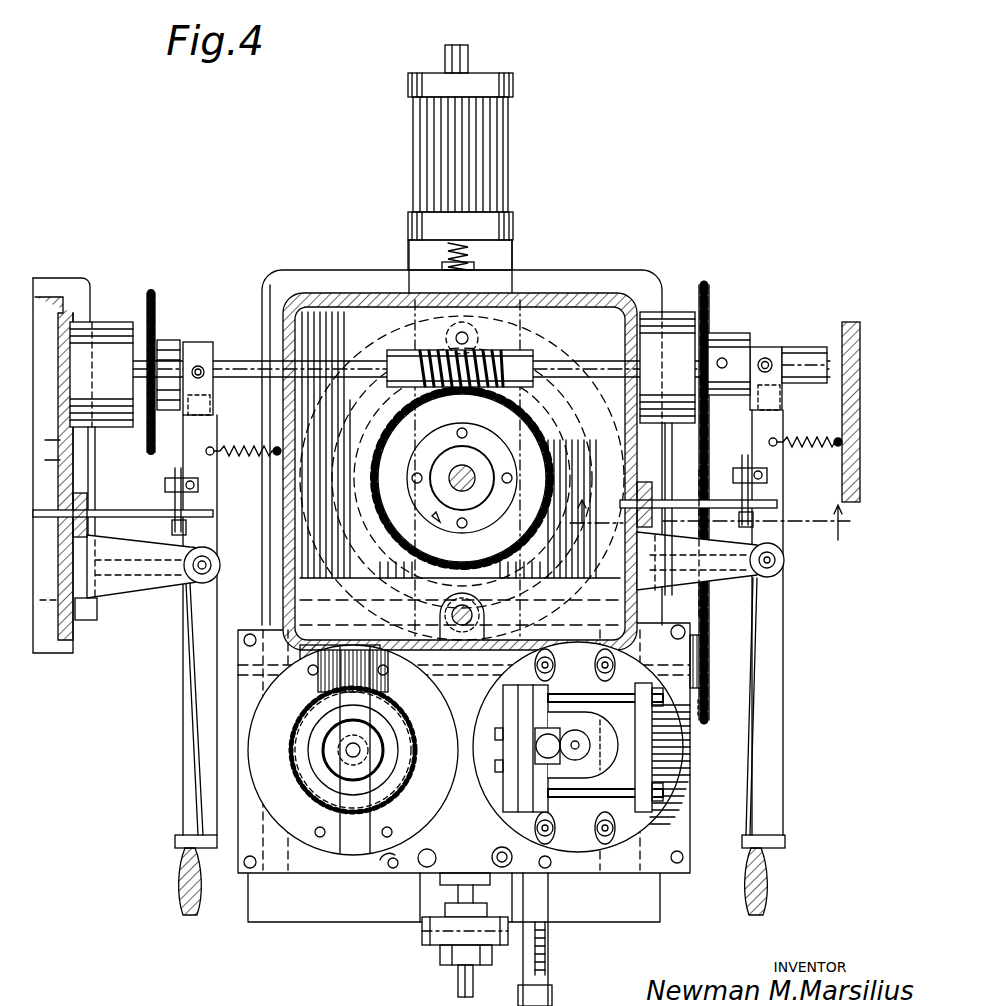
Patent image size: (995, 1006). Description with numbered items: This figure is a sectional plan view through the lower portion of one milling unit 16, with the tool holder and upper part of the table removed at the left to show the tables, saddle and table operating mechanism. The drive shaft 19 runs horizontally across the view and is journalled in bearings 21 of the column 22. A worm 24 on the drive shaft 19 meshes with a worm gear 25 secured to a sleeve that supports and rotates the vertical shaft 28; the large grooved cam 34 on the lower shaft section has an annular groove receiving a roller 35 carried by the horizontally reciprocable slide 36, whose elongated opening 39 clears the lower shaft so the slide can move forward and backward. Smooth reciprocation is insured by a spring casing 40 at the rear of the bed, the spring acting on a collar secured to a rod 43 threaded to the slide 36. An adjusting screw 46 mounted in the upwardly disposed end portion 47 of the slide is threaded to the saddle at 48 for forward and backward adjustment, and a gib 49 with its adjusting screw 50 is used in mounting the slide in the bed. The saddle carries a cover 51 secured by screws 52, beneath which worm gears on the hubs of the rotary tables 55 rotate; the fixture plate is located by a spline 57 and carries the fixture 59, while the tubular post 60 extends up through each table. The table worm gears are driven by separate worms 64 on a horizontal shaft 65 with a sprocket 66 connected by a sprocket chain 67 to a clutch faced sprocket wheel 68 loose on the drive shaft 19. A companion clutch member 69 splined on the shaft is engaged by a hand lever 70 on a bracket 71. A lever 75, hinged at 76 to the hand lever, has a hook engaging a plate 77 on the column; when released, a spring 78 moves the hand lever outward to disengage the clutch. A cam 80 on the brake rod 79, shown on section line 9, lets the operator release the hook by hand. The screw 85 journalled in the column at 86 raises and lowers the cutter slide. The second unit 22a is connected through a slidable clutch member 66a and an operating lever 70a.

The section line 9- 9 is at (719, 503).
The milling unit 16 is at (460, 470).
The drive shaft 19 is at (795, 348).
The bearings 21 is at (90, 335).
The column 22 is at (560, 293).
The second unit 22a is at (57, 283).
The worm 24 is at (500, 349).
The worm gear 25 is at (540, 452).
The vertical shaft 28 is at (452, 470).
The grooved cam 34 is at (382, 340).
The roller 35 is at (460, 268).
The slide 36 is at (378, 550).
The elongated opening 39 is at (430, 517).
The spring casing 40 is at (480, 148).
The rod 43 is at (472, 258).
The adjusting screw 46 is at (458, 982).
The upwardly disposed end portion 47 is at (425, 936).
The threaded connection 48 is at (458, 860).
The gib 49 is at (527, 983).
The adjusting screw 50 is at (549, 945).
The cover 51 is at (330, 870).
The screws 52 is at (250, 634).
The rotary table 55 is at (405, 762).
The spline 57 is at (365, 852).
The fixture 59 is at (660, 762).
The tubular post 60 is at (335, 753).
The worms 64 is at (300, 720).
The horizontal shaft 65 is at (405, 692).
The sprocket 66 is at (708, 714).
The slidable clutch member 66a is at (172, 338).
The sprocket chain 67 is at (708, 472).
The clutch faced sprocket wheel 68 is at (152, 298).
The clutch member 69 is at (735, 335).
The hand lever 70 is at (772, 652).
The operating lever 70a is at (181, 690).
The bracket 71 is at (128, 590).
The lever 75 is at (132, 511).
The hinge 76 is at (213, 502).
The plate 77 is at (93, 490).
The spring 78 is at (244, 448).
The brake rod 79 is at (183, 710).
The cam 80 is at (171, 527).
The screw 85 is at (480, 612).
The journal 86 is at (440, 613).